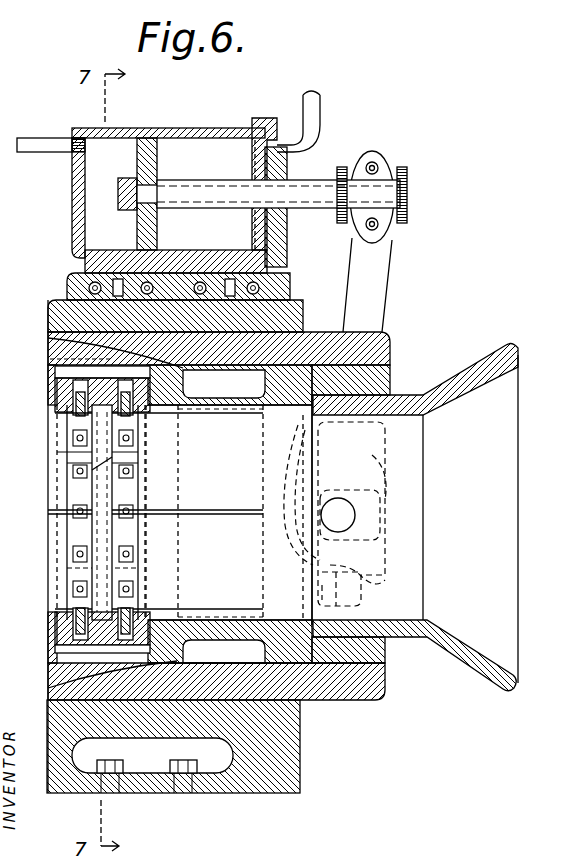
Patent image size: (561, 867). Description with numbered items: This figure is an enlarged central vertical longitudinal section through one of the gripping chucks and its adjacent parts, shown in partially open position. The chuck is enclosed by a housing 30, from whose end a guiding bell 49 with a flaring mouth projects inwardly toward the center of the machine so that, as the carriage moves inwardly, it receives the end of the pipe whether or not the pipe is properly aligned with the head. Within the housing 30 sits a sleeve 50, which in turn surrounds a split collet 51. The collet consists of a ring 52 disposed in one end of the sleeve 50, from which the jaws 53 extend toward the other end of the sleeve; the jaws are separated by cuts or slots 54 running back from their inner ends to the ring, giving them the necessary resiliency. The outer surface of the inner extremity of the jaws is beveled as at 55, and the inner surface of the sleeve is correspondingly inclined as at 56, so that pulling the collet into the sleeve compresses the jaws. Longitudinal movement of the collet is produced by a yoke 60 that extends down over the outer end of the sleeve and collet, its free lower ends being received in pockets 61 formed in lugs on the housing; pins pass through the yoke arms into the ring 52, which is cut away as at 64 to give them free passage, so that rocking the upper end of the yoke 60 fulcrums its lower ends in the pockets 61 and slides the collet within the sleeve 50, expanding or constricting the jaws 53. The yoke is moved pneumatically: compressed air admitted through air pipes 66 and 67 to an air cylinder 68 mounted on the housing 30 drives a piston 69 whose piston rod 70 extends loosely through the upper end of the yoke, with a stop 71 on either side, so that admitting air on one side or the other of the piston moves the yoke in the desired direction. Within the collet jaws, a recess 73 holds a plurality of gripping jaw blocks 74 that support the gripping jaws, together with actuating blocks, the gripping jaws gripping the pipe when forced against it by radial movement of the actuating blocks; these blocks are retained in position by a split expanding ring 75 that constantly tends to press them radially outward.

The housing 30 is at (272, 755).
The guiding bell 49 is at (518, 521).
The sleeve 50 is at (385, 688).
The split collet 51 is at (368, 641).
The ring 52 is at (390, 371).
The jaws 53 is at (55, 376).
The cuts or slots 54 is at (48, 513).
The beveled outer surface 55 is at (48, 348).
The beveled inner surface 56 is at (62, 338).
The yoke 60 is at (385, 297).
The pockets 61 is at (372, 560).
The cut away portion 64 is at (380, 496).
The air pipe 66 is at (44, 132).
The air pipe 67 is at (312, 113).
The air cylinder 68 is at (198, 120).
The piston 69 is at (152, 231).
The piston rod 70 is at (236, 206).
The stop 71 is at (342, 166).
The recess 73 is at (55, 385).
The gripping jaw blocks 74 is at (55, 660).
The expanding ring 75 is at (98, 547).